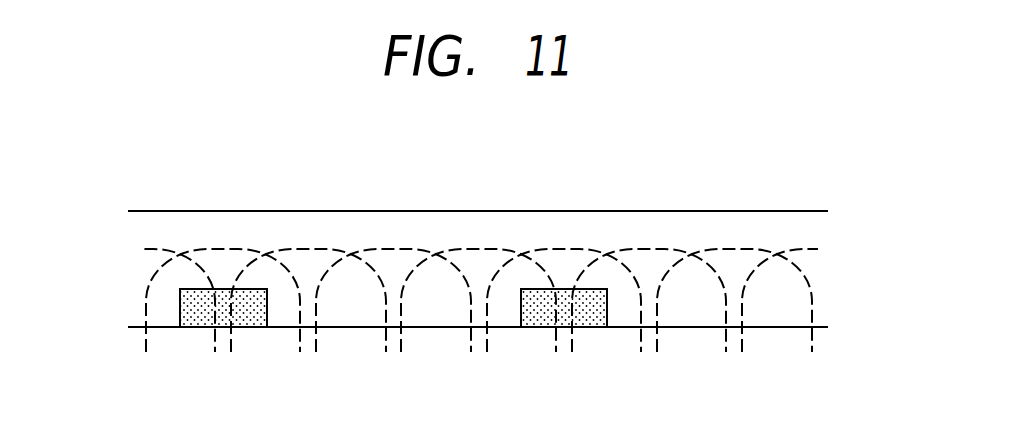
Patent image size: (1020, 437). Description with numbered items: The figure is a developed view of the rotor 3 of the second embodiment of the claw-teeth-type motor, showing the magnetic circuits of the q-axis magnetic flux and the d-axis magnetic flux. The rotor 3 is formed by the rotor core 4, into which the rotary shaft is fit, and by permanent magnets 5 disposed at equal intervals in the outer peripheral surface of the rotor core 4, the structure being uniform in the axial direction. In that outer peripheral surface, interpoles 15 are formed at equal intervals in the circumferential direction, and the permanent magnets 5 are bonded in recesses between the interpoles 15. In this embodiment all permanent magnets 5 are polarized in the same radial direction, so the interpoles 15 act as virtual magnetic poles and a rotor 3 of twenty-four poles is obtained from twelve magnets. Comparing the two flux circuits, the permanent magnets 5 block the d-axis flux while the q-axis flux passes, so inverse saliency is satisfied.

The rotor 3 is at (478, 229).
The rotor core 4 is at (705, 228).
The permanent magnet 5 is at (254, 296).
The interpole 15 is at (432, 304).